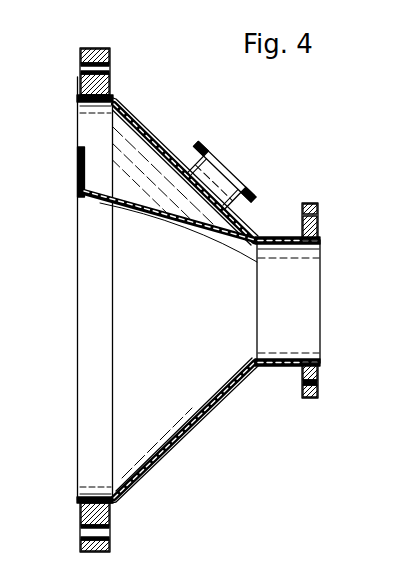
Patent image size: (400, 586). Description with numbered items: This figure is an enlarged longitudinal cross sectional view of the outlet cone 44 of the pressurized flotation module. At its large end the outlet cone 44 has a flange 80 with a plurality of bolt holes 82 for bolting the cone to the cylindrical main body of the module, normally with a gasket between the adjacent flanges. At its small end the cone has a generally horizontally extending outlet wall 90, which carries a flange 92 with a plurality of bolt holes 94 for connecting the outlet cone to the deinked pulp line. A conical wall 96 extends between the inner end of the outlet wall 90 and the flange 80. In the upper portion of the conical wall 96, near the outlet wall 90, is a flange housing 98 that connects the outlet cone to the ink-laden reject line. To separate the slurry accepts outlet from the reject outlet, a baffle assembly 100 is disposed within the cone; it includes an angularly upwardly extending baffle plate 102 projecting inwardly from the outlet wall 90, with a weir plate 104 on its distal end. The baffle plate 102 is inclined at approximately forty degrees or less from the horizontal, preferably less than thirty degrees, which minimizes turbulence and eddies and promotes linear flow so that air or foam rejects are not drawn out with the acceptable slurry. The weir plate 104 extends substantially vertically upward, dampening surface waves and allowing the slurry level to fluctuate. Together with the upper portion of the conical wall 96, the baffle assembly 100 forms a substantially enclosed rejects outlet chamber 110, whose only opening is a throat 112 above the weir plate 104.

The outlet cone 44 is at (280, 167).
The flange 80 is at (103, 50).
The bolt holes 82 is at (105, 67).
The outlet wall 90 is at (280, 366).
The flange 92 is at (312, 203).
The bolt holes 94 is at (317, 213).
The conical wall 96 is at (183, 440).
The flange housing 98 is at (217, 162).
The baffle assembly 100 is at (165, 226).
The baffle plate 102 is at (135, 212).
The weir plate 104 is at (78, 170).
The rejects outlet chamber 110 is at (138, 158).
The throat 112 is at (100, 128).